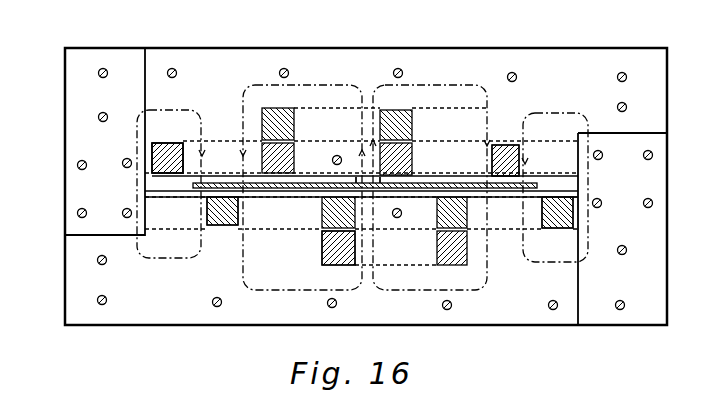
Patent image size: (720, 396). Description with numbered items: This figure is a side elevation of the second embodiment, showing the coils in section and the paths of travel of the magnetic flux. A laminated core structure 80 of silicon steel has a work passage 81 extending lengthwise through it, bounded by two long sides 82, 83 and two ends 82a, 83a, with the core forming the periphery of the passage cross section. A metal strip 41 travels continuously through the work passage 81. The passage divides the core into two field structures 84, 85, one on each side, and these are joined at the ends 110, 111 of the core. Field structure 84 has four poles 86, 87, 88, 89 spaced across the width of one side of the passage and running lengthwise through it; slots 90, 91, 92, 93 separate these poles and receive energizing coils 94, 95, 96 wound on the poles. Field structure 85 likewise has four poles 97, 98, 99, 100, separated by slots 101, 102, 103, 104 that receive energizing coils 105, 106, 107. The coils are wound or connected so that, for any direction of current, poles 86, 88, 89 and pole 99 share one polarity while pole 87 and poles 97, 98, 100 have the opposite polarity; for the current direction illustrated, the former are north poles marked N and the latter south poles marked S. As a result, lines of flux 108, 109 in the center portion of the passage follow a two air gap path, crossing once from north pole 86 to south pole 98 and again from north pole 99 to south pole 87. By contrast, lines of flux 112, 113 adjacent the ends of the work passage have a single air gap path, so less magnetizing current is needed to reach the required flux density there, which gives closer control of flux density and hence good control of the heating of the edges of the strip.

The laminated core structure 80 is at (638, 48).
The field structure 84 is at (458, 48).
The field structure 85 is at (524, 360).
The end 110 is at (66, 173).
The end 111 is at (660, 175).
The work passage 81 is at (577, 176).
The long side 82 is at (352, 177).
The end 82a is at (150, 183).
The long side 83 is at (313, 198).
The end 83a is at (570, 190).
The metal strip 41 is at (193, 185).
The pole 86 is at (230, 142).
The pole 87 is at (316, 154).
The pole 88 is at (460, 158).
The pole 89 is at (558, 161).
The slot 90 is at (163, 139).
The slot 91 is at (265, 110).
The slot 92 is at (378, 110).
The slot 93 is at (513, 146).
The energizing coil 94 is at (152, 158).
The energizing coil 95 is at (262, 118).
The energizing coil 96 is at (497, 150).
The pole 97 is at (173, 207).
The pole 98 is at (285, 210).
The pole 99 is at (421, 217).
The pole 100 is at (512, 210).
The slot 101 is at (234, 225).
The slot 102 is at (347, 265).
The slot 103 is at (442, 267).
The slot 104 is at (571, 236).
The energizing coil 105 is at (238, 228).
The energizing coil 106 is at (330, 244).
The energizing coil 107 is at (568, 215).
The line of flux 108 is at (297, 291).
The line of flux 109 is at (420, 291).
The line of flux 112 is at (176, 258).
The line of flux 113 is at (550, 263).